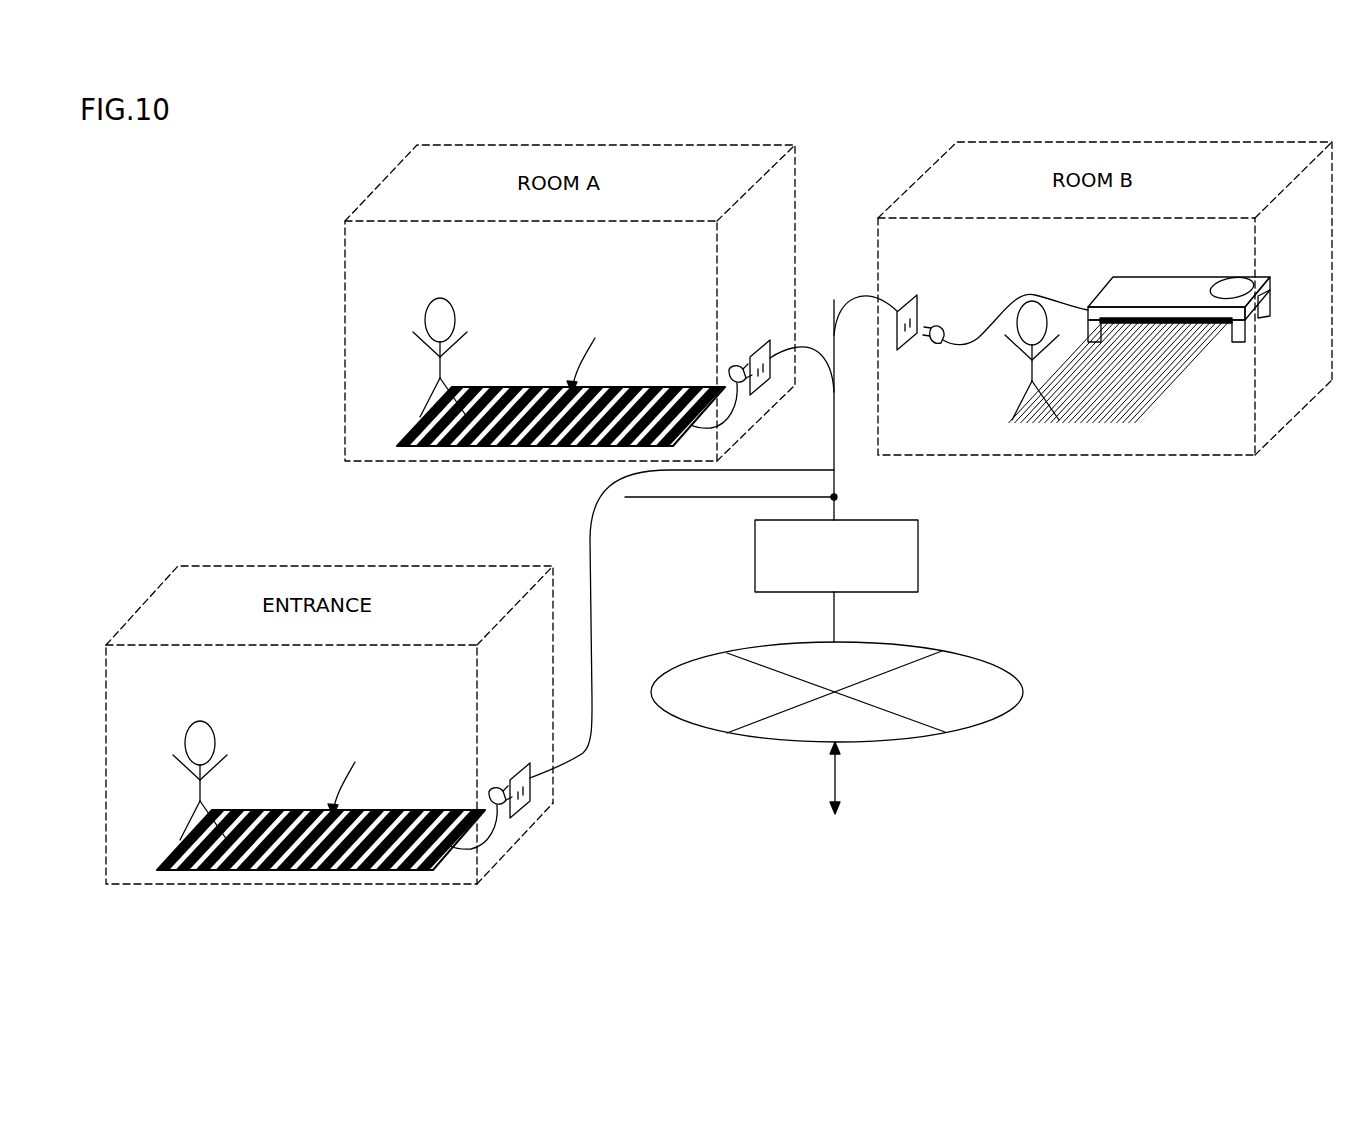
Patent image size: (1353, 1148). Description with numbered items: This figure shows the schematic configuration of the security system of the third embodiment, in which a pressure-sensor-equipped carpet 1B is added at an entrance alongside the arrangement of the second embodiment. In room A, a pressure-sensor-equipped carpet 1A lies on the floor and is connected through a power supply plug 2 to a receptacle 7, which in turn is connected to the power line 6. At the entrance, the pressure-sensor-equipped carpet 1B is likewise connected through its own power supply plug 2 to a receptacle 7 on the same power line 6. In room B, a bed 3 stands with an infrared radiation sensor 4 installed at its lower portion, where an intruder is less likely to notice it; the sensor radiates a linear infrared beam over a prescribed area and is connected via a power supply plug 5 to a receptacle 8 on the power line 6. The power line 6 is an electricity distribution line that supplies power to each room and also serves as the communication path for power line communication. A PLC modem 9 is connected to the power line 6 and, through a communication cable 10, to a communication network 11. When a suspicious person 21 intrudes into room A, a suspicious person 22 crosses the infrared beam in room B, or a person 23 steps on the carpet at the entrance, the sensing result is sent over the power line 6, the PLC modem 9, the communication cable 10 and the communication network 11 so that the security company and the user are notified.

The pressure-sensor-equipped carpet 1A is at (545, 420).
The pressure-sensor-equipped carpet 1B is at (305, 840).
The power supply plug 2 is at (730, 367).
The bed 3 is at (1272, 281).
The infrared radiation sensor 4 is at (1221, 327).
The power supply plug 5 is at (941, 326).
The power line 6 is at (836, 470).
The receptacle 7 is at (763, 341).
The receptacle 8 is at (917, 302).
The PLC modem 9 is at (918, 547).
The communication cable 10 is at (834, 610).
The communication network 11 is at (972, 657).
The suspicious person 21 is at (449, 300).
The suspicious person 22 is at (1018, 339).
The person 23 is at (209, 724).